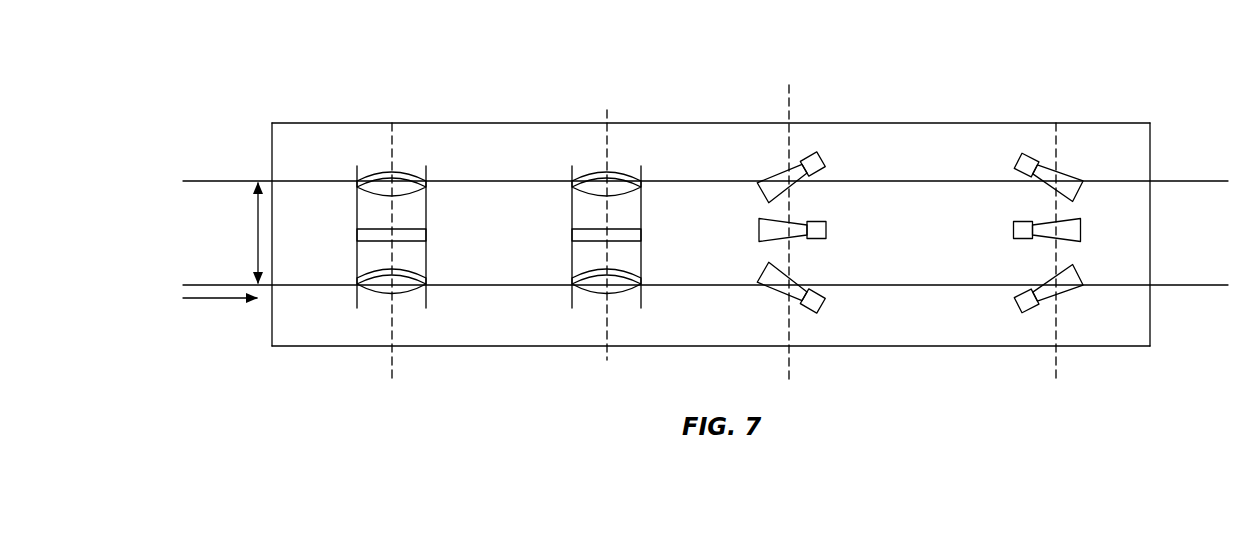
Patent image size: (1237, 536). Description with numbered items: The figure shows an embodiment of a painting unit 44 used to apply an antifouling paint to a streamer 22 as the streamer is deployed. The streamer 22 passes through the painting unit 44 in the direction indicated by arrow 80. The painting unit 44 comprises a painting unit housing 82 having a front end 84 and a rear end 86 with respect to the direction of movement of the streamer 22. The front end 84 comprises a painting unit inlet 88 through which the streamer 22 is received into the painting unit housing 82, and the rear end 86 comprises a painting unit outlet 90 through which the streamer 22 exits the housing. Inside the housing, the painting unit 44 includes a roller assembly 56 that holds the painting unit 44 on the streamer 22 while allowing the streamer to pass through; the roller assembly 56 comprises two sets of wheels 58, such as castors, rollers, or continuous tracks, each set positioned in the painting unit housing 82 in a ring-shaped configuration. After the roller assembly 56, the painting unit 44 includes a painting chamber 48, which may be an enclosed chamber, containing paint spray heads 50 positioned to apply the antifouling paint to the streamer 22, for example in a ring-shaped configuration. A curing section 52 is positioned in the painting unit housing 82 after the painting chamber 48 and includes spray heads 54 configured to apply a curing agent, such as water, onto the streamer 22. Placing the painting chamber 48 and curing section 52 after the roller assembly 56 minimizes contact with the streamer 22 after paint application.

The streamer 22 is at (228, 181).
The painting unit 44 is at (955, 88).
The painting chamber 48 is at (745, 233).
The paint spray heads 50 is at (774, 232).
The curing section 52 is at (1065, 252).
The spray heads 54 is at (1047, 192).
The roller assembly 56 is at (499, 246).
The wheels 58 is at (412, 174).
The arrow 80 is at (223, 301).
The painting unit housing 82 is at (492, 123).
The front end 84 is at (272, 127).
The rear end 86 is at (1151, 137).
The painting unit inlet 88 is at (286, 266).
The painting unit outlet 90 is at (1170, 198).